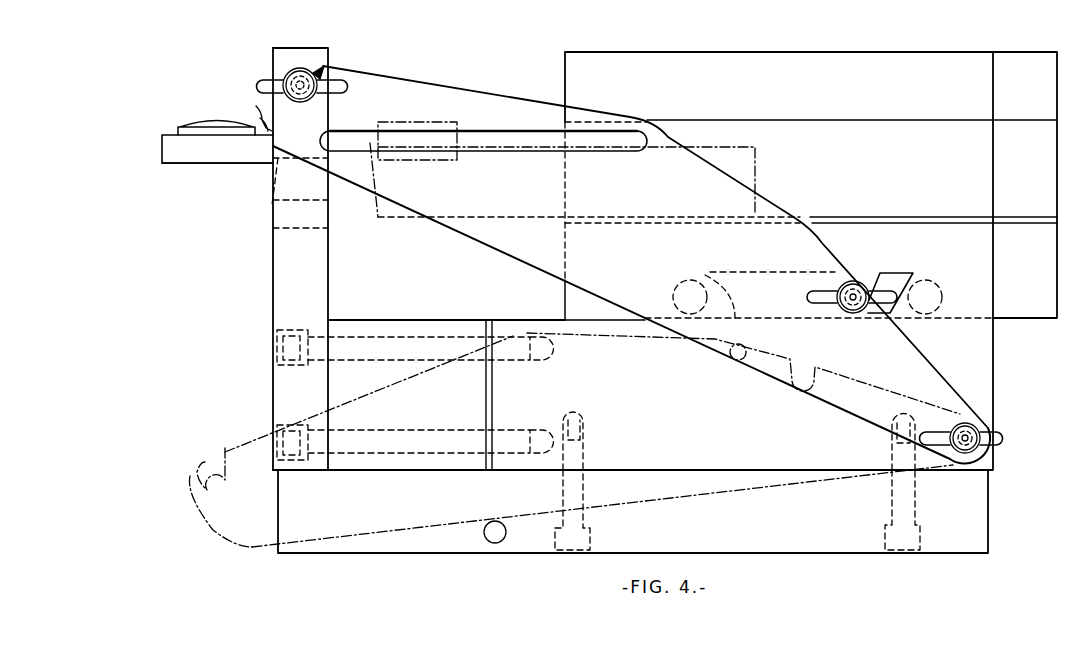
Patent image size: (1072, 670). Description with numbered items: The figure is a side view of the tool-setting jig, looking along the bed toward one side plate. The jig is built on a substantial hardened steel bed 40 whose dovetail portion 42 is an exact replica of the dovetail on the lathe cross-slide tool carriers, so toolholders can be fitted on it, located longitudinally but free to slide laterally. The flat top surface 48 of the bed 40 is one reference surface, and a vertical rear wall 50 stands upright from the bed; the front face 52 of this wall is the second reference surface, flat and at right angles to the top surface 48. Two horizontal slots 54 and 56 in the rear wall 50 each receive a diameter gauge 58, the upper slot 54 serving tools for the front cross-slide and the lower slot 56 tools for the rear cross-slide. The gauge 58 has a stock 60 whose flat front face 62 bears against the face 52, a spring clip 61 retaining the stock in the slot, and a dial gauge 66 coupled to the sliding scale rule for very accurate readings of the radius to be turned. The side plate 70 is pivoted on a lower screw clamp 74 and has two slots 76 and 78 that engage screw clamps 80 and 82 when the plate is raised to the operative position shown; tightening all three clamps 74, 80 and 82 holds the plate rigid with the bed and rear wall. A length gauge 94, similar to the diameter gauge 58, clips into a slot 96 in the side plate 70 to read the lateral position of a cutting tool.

The bed 40 is at (541, 332).
The dovetail portion 42 is at (776, 272).
The top surface 48 is at (416, 318).
The rear wall 50 is at (329, 270).
The front face 52 is at (273, 297).
The slot 54 is at (274, 187).
The slot 56 is at (274, 230).
The diameter gauge 58 is at (222, 163).
The stock 60 is at (176, 135).
The spring clip 61 is at (256, 104).
The flat front face 62 is at (282, 143).
The dial gauge 66 is at (222, 120).
The side plate 70 is at (778, 203).
The lower screw clamp 74 is at (980, 430).
The slot 76 is at (325, 70).
The slot 78 is at (855, 293).
The screw clamp 80 is at (286, 72).
The screw clamp 82 is at (874, 297).
The length gauge 94 is at (445, 126).
The slot 96 is at (530, 136).